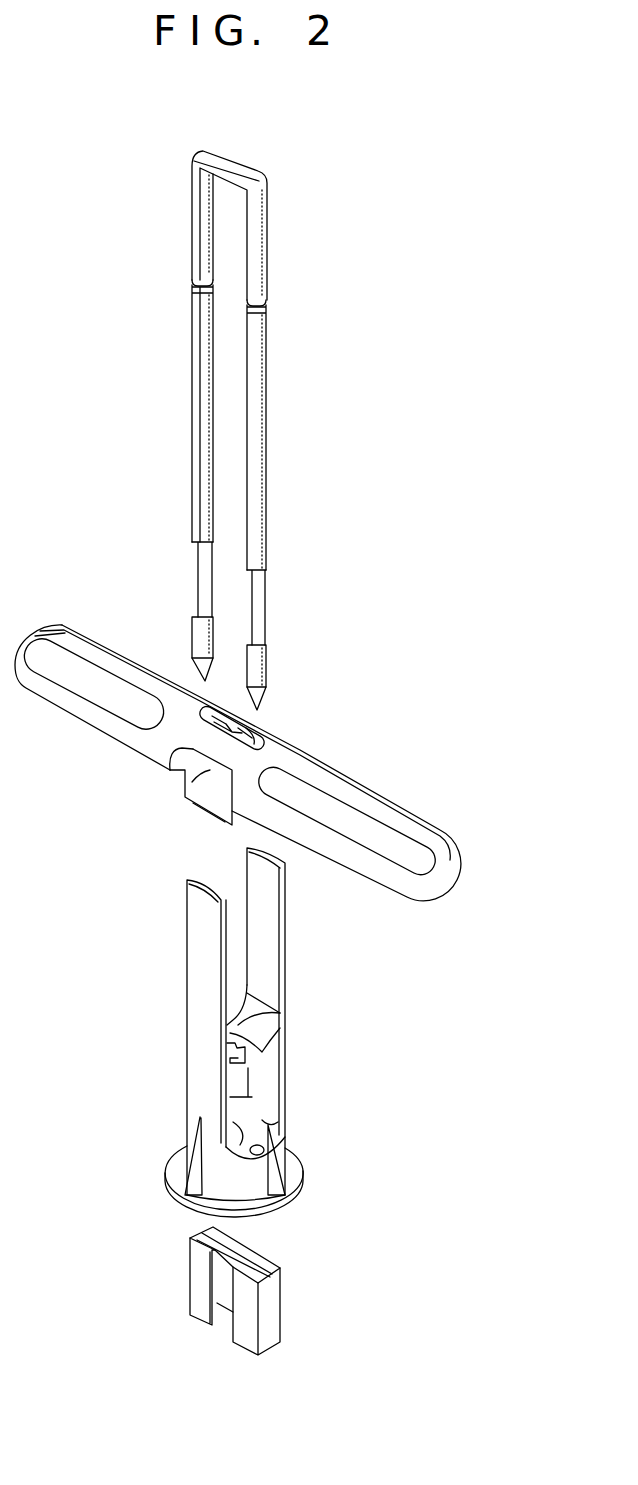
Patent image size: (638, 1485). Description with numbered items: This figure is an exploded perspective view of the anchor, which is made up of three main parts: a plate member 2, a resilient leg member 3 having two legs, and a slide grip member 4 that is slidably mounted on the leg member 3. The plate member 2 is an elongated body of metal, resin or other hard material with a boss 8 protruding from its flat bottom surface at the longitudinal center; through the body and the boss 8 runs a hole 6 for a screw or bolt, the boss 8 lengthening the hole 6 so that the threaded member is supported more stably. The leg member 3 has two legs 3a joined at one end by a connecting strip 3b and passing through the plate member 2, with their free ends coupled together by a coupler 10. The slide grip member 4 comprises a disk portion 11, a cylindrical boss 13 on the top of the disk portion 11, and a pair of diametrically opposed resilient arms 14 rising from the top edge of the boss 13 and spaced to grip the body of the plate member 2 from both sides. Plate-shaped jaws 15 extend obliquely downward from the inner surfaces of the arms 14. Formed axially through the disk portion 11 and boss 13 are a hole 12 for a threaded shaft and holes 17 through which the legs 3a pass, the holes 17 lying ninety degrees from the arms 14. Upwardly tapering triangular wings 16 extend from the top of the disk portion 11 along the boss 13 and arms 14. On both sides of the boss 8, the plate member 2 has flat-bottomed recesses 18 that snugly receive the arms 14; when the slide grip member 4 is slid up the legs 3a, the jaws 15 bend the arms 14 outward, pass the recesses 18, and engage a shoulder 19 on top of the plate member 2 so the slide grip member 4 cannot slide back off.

The plate member 2 is at (272, 763).
The resilient leg member 3 is at (215, 410).
The legs 3a is at (262, 432).
The connecting strip 3b is at (223, 162).
The slide grip member 4 is at (231, 1063).
The hole 6 is at (247, 725).
The boss 8 is at (210, 817).
The coupler 10 is at (268, 1313).
The disk portion 11 is at (298, 1190).
The hole 12 is at (232, 1120).
The cylindrical boss 13 is at (273, 1120).
The resilient arms 14 is at (250, 865).
The jaws 15 is at (262, 1014).
The triangular wings 16 is at (185, 1195).
The holes 17 is at (266, 1147).
The recess 18 is at (210, 770).
The shoulder 19 is at (270, 734).